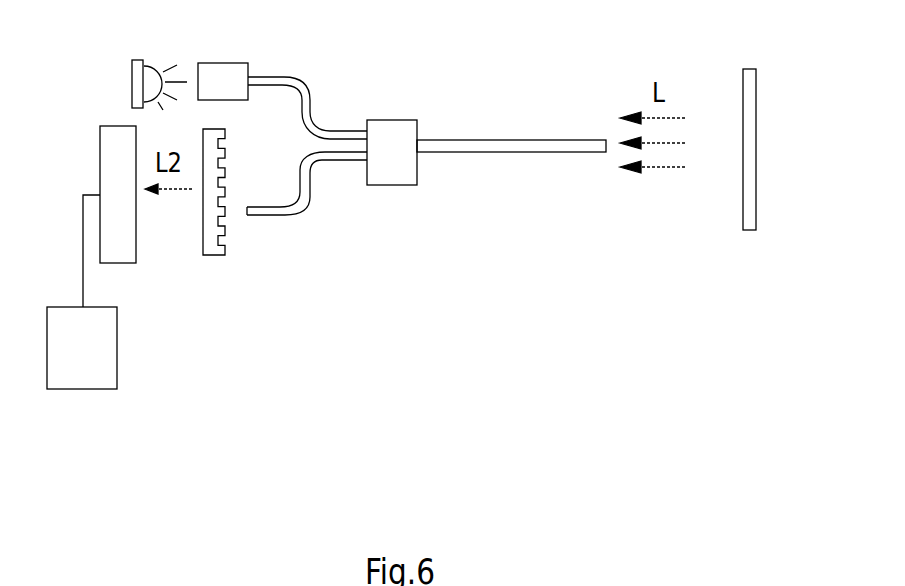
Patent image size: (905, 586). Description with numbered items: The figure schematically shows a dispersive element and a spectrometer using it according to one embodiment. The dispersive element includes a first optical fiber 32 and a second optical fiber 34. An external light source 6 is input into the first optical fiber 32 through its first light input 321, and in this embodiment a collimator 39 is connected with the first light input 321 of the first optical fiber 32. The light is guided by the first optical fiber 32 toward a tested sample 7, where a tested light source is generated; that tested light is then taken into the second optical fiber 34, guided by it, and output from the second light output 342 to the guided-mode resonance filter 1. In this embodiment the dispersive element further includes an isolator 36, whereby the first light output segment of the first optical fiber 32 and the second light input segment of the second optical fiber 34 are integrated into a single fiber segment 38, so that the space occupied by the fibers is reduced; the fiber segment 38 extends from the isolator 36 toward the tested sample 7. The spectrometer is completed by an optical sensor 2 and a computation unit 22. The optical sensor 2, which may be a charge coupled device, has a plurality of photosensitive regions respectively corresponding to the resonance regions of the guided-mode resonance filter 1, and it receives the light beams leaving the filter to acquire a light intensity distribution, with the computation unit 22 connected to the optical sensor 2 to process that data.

The guided-mode resonance filter 1 is at (203, 242).
The optical sensor 2 is at (100, 128).
The computation unit 22 is at (112, 340).
The external light source 6 is at (148, 65).
The tested sample 7 is at (743, 221).
The first optical fiber 32 is at (312, 93).
The first light input 321 is at (253, 87).
The second optical fiber 34 is at (311, 201).
The second light output 342 is at (250, 218).
The isolator 36 is at (418, 119).
The fiber segment 38 is at (507, 152).
The collimator 39 is at (222, 62).